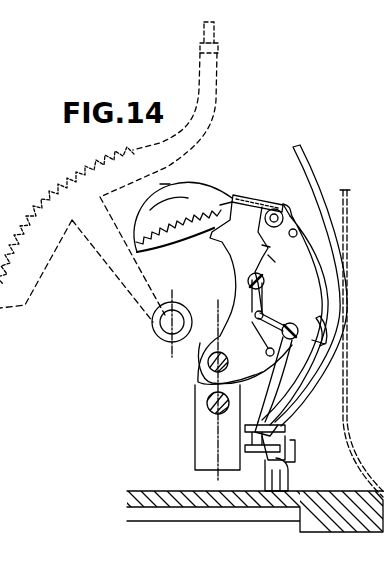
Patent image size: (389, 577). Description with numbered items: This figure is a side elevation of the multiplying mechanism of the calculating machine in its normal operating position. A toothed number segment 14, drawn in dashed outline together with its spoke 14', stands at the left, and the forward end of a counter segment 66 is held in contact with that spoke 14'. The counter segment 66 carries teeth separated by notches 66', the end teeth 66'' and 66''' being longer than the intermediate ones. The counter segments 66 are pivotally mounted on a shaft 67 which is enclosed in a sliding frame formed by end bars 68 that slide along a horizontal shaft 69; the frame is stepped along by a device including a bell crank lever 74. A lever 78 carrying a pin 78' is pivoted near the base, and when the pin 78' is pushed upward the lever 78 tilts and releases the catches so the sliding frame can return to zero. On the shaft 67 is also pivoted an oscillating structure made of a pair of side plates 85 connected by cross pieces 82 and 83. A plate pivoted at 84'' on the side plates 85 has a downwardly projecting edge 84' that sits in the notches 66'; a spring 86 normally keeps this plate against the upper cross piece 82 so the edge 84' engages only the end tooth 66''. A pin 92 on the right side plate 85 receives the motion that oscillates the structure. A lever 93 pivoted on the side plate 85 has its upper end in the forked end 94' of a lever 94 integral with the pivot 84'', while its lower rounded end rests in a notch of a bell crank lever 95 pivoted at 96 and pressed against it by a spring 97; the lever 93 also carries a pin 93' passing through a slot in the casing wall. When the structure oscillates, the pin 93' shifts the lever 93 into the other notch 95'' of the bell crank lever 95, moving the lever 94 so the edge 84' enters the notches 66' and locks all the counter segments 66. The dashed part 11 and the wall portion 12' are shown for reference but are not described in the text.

The carriage arm (dashed) 11 is at (216, 33).
The number segment 14 is at (67, 215).
The spoke 14' is at (82, 259).
The counter segment 66 is at (221, 293).
The notch 66' is at (164, 210).
The end tooth 66'' is at (257, 180).
The end tooth 66''' is at (157, 190).
The shaft 67 is at (198, 372).
The end bar 68 is at (202, 433).
The horizontal shaft 69 is at (207, 404).
The bell crank lever 74 is at (306, 178).
The lever 78 is at (299, 454).
The pin 78' is at (288, 425).
The cross piece 82 is at (262, 205).
The cross piece 83 is at (320, 342).
The downwardly projecting edge 84' is at (209, 193).
The pivot 84'' is at (322, 188).
The side plate 85 is at (312, 284).
The spring 86 is at (183, 217).
The pin 92 is at (290, 208).
The lever 93 is at (317, 317).
The pin 93' is at (226, 288).
The lever 94 is at (319, 233).
The forked end 94' is at (326, 251).
The bell crank lever 95 is at (319, 379).
The notch 95'' is at (198, 323).
The pivot 96 is at (322, 322).
The spring 97 is at (246, 345).
The housing wall 12' is at (252, 361).